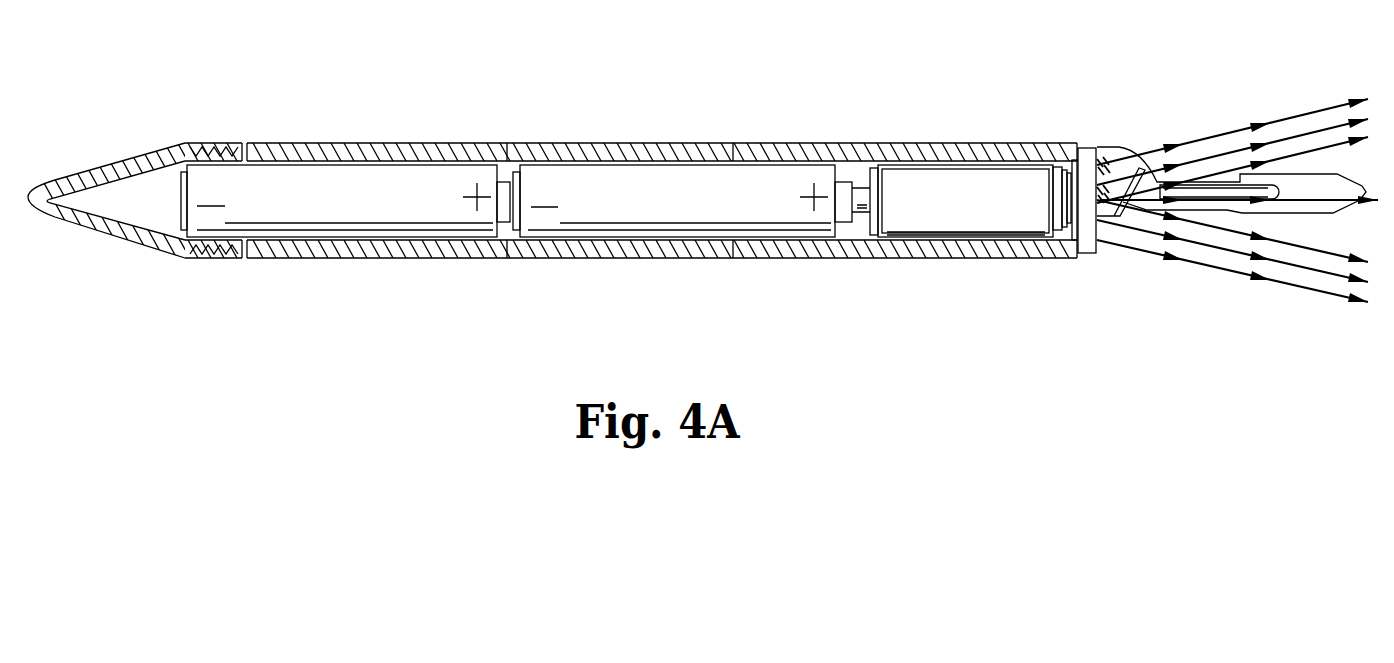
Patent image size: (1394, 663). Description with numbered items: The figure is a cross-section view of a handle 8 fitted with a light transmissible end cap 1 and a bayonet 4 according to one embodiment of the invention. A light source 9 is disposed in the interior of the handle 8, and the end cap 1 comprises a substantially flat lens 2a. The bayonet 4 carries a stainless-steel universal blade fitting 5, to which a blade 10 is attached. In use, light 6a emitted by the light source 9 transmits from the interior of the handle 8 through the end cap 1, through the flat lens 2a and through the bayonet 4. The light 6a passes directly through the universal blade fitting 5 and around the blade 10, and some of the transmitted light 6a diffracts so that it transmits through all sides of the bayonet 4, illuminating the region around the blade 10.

The light transmissible end cap 1 is at (1070, 183).
The flat lens 2a is at (1088, 150).
The bayonet 4 is at (1156, 215).
The universal blade fitting 5 is at (1212, 197).
The light rays 6a is at (1307, 200).
The handle 8 is at (700, 146).
The light source 9 is at (972, 216).
The blade 10 is at (1310, 181).